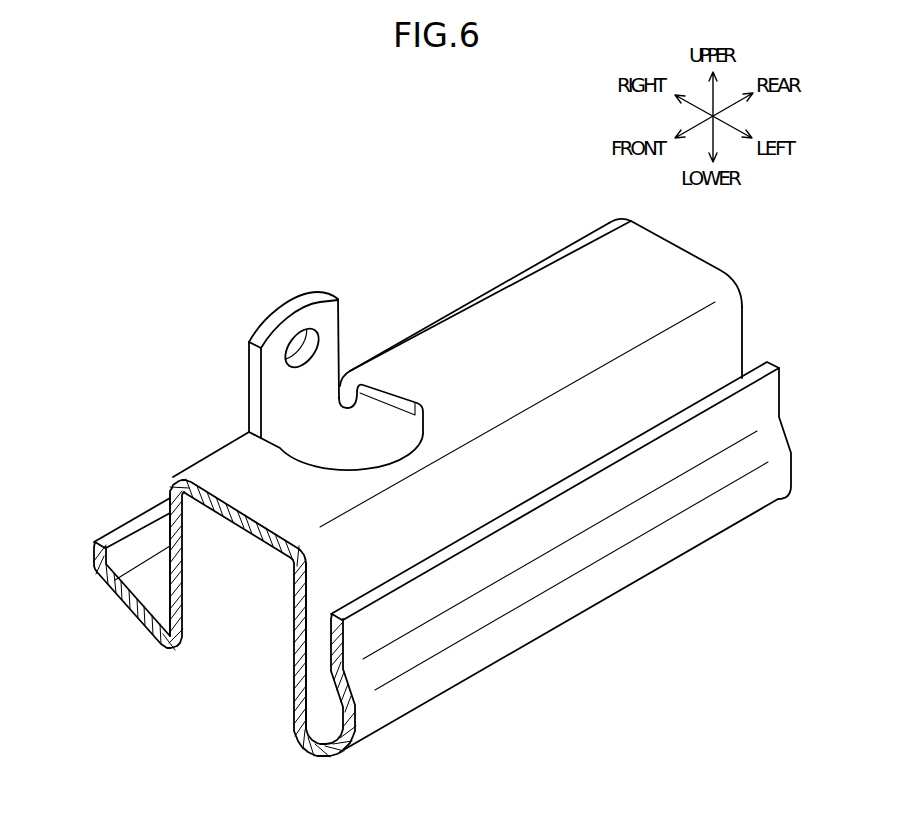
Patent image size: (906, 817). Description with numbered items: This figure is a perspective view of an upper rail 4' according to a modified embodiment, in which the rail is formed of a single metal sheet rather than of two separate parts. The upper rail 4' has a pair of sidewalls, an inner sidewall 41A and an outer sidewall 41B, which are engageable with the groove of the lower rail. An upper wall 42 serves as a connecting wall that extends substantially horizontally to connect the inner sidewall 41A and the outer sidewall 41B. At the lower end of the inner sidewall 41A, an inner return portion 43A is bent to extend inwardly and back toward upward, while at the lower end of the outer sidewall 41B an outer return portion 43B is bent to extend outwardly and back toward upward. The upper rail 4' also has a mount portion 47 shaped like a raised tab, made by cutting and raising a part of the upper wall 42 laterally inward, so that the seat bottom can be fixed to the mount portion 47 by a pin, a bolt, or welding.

The upper rail 4' is at (432, 454).
The upper wall 42 is at (482, 332).
The mount portion 47 is at (275, 346).
The inner sidewall 41A is at (168, 566).
The outer sidewall 41B is at (417, 547).
The inner return portion 43A is at (120, 618).
The outer return portion 43B is at (603, 582).